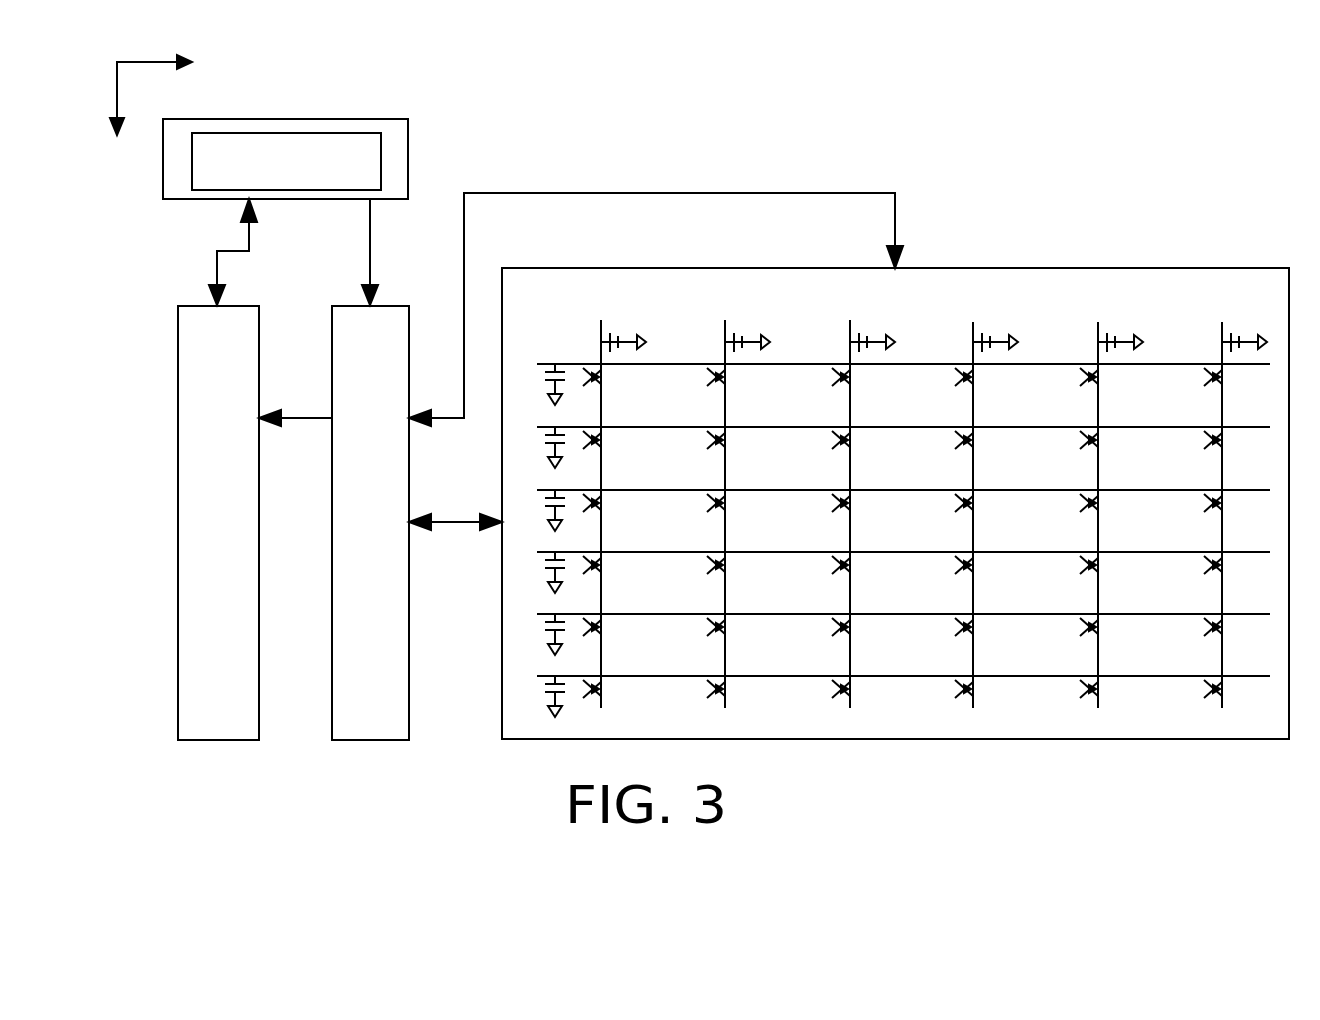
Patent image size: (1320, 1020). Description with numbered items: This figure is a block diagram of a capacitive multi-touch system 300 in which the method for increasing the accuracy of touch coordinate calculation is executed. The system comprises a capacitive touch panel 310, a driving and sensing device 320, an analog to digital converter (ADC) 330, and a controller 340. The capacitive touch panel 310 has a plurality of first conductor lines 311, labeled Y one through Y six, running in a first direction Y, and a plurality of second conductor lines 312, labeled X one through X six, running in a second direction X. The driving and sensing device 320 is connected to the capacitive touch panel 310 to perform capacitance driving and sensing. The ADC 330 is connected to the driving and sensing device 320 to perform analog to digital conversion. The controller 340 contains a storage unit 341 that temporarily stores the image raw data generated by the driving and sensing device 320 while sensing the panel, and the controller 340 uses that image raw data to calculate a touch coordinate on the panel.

The capacitive multi-touch system 300 is at (697, 396).
The capacitive touch panel 310 is at (895, 457).
The first conductor lines 311 is at (568, 363).
The second conductor lines 312 is at (1222, 322).
The driving and sensing device 320 is at (409, 625).
The analog to digital converter (ADC) 330 is at (259, 550).
The controller 340 is at (316, 185).
The storage unit 341 is at (382, 162).